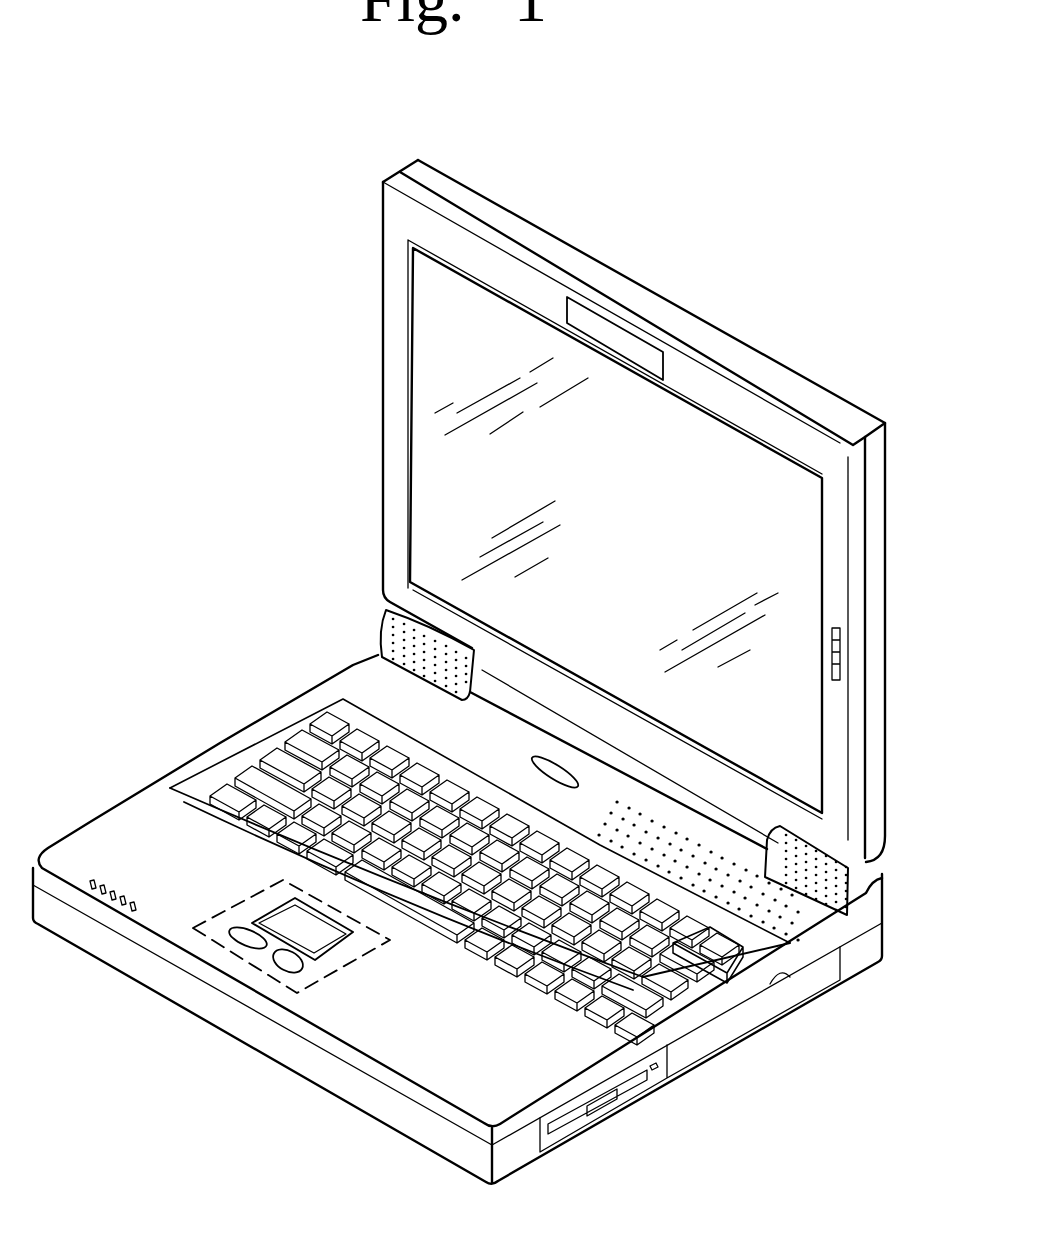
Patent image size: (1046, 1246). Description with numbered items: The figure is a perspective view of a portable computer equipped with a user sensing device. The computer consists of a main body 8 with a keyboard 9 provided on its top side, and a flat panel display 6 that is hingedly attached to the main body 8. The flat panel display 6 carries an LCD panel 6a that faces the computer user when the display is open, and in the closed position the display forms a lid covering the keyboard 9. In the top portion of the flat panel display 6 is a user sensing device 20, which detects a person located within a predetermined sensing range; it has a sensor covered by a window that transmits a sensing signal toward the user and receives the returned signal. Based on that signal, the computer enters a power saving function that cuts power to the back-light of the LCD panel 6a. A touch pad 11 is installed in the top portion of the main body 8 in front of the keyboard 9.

The flat panel display 6 is at (368, 350).
The LCD panel 6a is at (430, 490).
The main body 8 is at (121, 786).
The keyboard 9 is at (268, 750).
The touch pad 11 is at (288, 987).
The user sensing device 20 is at (615, 325).